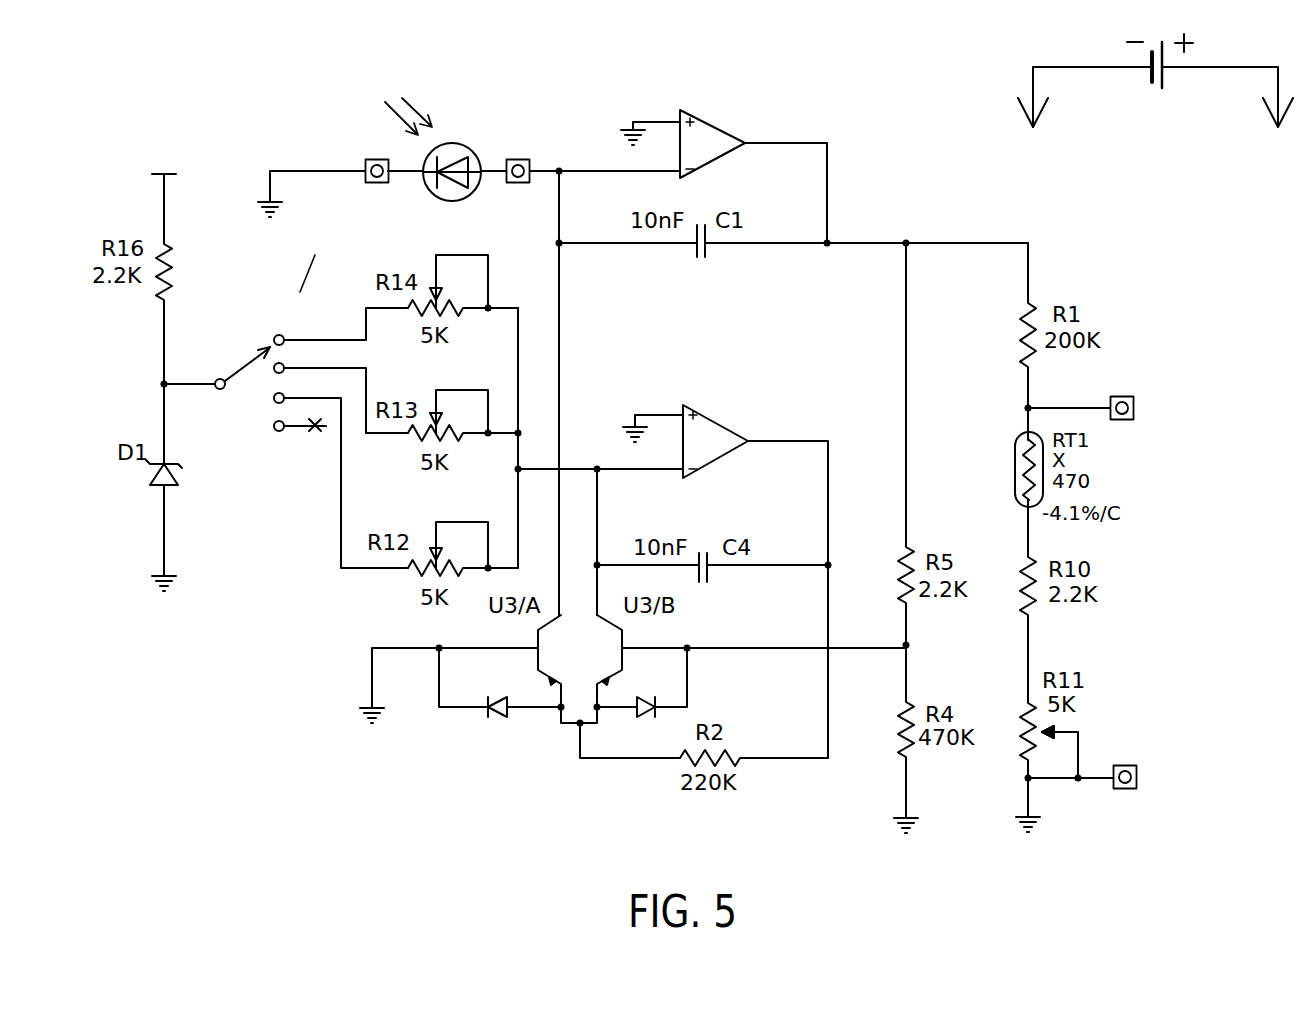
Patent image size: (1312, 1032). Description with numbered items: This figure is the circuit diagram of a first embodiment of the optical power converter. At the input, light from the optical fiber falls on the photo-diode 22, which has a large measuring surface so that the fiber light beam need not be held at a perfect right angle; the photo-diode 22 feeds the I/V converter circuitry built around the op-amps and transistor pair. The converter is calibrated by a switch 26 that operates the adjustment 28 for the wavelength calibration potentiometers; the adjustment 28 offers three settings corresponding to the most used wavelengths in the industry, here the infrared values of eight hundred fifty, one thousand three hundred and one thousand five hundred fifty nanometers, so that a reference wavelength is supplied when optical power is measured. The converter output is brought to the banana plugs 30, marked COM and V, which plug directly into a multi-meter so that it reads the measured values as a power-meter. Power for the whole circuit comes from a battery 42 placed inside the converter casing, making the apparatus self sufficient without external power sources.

The photo-diode 22 is at (463, 147).
The switch 26 is at (306, 467).
The adjustment 28 is at (366, 490).
The banana plugs 30 is at (1135, 386).
The battery 42 is at (1170, 144).